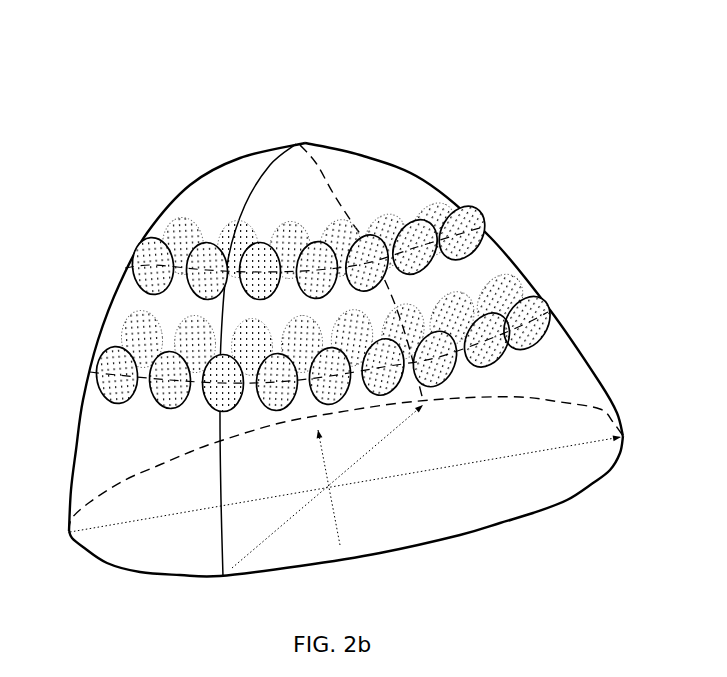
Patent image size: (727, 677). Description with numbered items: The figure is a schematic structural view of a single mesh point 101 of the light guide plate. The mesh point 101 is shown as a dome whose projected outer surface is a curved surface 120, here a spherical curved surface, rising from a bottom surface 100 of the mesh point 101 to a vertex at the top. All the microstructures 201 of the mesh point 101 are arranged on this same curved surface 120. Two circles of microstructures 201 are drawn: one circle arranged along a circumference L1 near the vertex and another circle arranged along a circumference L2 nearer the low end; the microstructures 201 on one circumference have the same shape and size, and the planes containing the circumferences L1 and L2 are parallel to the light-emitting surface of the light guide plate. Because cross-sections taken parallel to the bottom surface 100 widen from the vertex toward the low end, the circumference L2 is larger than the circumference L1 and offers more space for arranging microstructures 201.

The mesh point 101 is at (265, 62).
The bottom surface of mesh point 100 is at (522, 493).
The curved surface 120 is at (370, 167).
The microstructure 201 is at (327, 303).
The circumference of cross-section of spherical curved surface L1 is at (473, 230).
The circumference of cross-section of spherical curved surface L2 is at (545, 312).